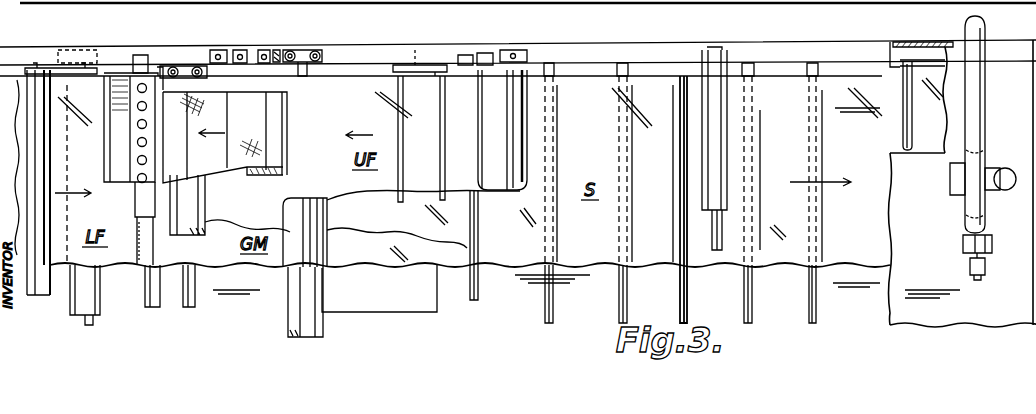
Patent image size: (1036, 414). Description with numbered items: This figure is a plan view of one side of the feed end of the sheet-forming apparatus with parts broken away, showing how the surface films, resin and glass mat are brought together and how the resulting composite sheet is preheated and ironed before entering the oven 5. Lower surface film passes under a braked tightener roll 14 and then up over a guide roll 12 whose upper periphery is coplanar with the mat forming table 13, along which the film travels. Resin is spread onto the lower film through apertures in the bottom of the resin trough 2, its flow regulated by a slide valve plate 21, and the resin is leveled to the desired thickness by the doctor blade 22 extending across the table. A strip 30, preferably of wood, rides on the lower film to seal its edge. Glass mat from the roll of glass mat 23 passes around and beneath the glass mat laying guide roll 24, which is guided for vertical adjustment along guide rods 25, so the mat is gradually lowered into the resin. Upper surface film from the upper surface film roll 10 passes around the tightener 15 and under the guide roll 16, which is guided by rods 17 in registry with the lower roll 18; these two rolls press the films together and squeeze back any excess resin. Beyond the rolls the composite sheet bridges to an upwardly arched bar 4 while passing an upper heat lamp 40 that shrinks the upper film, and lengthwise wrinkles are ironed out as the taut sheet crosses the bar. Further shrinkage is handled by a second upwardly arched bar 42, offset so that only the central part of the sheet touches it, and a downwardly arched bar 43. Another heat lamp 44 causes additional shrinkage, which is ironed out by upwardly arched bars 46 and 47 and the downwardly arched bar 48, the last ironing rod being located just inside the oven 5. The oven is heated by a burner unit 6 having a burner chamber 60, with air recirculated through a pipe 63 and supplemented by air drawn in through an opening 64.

The resin trough 2 is at (108, 160).
The upwardly arched bar 4 is at (546, 291).
The oven 5 is at (906, 42).
The burner unit 6 is at (945, 207).
The upper surface film roll 10 is at (528, 126).
The guide roll 12 is at (102, 315).
The mat forming table 13 is at (171, 314).
The tightener roll 14 is at (33, 295).
The tightener 15 is at (425, 65).
The guide roll 16 is at (310, 213).
The guide rods 17 is at (315, 51).
The lower roll 18 is at (313, 325).
The slide valve plate 21 is at (137, 172).
The doctor blade 22 is at (140, 268).
The roll of glass mat 23 is at (268, 115).
The glass mat laying guide roll 24 is at (206, 216).
The guide rods 25 is at (197, 67).
The strip 30 is at (258, 76).
The upper heat lamp 40 is at (471, 231).
The second upwardly arched bar 42 is at (620, 291).
The downwardly arched bar 43 is at (681, 290).
The heat lamp 44 is at (722, 178).
The upwardly arched bar 46 is at (745, 290).
The upwardly arched bar 47 is at (810, 285).
The downwardly arched bar 48 is at (914, 150).
The burner chamber 60 is at (968, 243).
The pipe 63 is at (978, 95).
The opening 64 is at (970, 256).